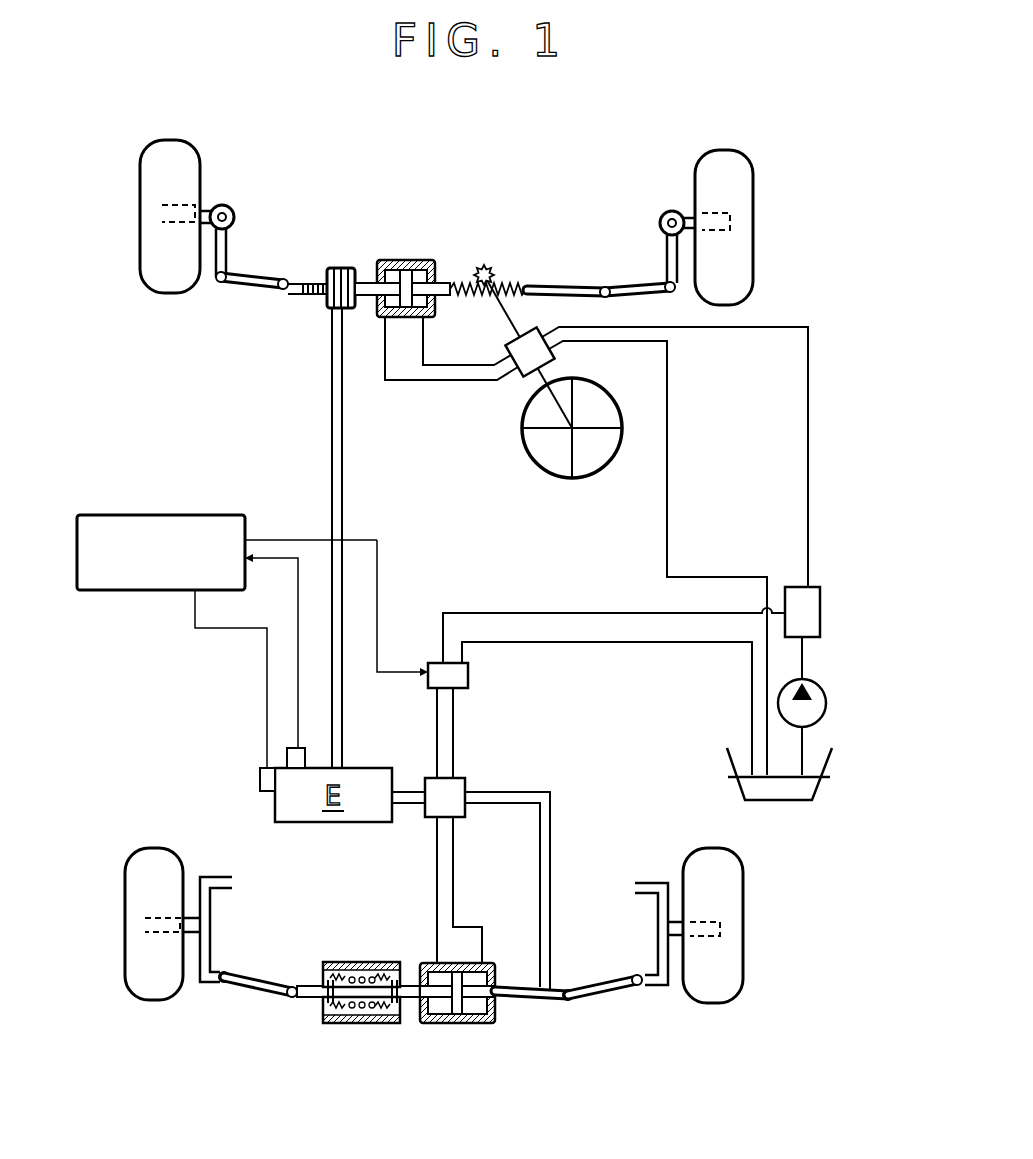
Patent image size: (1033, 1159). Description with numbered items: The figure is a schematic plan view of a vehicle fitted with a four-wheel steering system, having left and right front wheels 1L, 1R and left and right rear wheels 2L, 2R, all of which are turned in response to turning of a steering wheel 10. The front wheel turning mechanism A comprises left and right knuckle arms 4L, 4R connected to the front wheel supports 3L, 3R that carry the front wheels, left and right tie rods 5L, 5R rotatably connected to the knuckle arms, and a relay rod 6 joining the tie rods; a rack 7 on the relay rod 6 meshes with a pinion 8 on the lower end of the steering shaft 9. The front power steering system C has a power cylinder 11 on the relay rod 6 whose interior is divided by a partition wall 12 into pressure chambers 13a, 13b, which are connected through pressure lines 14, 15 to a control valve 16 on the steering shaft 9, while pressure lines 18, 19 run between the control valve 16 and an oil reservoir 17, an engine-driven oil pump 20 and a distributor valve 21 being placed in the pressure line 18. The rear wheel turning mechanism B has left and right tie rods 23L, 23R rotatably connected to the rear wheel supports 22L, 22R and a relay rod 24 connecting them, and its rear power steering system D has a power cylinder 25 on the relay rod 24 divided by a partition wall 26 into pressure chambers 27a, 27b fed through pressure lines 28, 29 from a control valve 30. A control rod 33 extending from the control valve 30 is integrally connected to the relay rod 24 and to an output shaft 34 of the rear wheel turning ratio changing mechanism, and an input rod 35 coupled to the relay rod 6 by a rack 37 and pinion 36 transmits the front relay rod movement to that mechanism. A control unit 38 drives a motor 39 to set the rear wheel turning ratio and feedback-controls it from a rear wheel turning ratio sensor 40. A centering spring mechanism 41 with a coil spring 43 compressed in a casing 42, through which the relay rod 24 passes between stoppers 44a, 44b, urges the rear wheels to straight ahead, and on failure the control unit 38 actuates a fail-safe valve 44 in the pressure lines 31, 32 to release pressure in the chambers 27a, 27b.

The left front wheel 1L is at (172, 157).
The right front wheel 1R is at (715, 175).
The left rear wheel 2L is at (155, 985).
The right rear wheel 2R is at (725, 980).
The left front wheel support 3L is at (232, 205).
The right front wheel support 3R is at (667, 210).
The left knuckle arm 4L is at (228, 247).
The right knuckle arm 4R is at (666, 255).
The left tie rod 5L is at (241, 292).
The right tie rod 5R is at (660, 305).
The relay rod 6 is at (567, 285).
The rack 7 is at (515, 282).
The pinion 8 is at (489, 263).
The steering shaft 9 is at (518, 333).
The steering wheel 10 is at (532, 448).
The power cylinder 11 is at (408, 255).
The partition wall 12 is at (410, 318).
The pressure chamber 13a is at (435, 280).
The pressure chamber 13b is at (390, 283).
The pressure line 14 is at (462, 364).
The pressure line 15 is at (440, 386).
The control valve 16 is at (520, 362).
The oil reservoir 17 is at (735, 770).
The pressure line 18 is at (806, 480).
The pressure line 19 is at (667, 525).
The oil pump 20 is at (818, 693).
The distributor valve 21 is at (787, 595).
The left rear wheel support 22L is at (207, 948).
The right rear wheel support 22R is at (659, 940).
The left tie rod 23L is at (252, 987).
The right tie rod 23R is at (620, 992).
The relay rod 24 is at (520, 998).
The power cylinder 25 is at (492, 1032).
The partition wall 26 is at (445, 1026).
The pressure chamber 27a is at (468, 980).
The pressure chamber 27b is at (428, 980).
The pressure line 28 is at (437, 850).
The pressure line 29 is at (455, 856).
The control valve 30 is at (470, 782).
The pressure line 31 is at (585, 612).
The pressure line 32 is at (640, 645).
The control rod 33 is at (549, 853).
The output shaft 34 is at (405, 790).
The input rod 35 is at (345, 488).
The pinion 36 is at (330, 268).
The rack 37 is at (312, 296).
The control unit 38 is at (225, 514).
The motor 39 is at (260, 783).
The rear wheel turning ratio sensor 40 is at (267, 755).
The centering spring mechanism 41 is at (340, 1028).
The casing 42 is at (335, 962).
The coil spring 43 is at (362, 962).
The fail-safe valve 44 is at (470, 676).
The stopper 44a is at (402, 1000).
The stopper 44b is at (325, 998).
The front wheel turning mechanism A is at (503, 306).
The rear wheel turning mechanism B is at (334, 1008).
The front power steering system C is at (406, 262).
The rear power steering system D is at (473, 997).